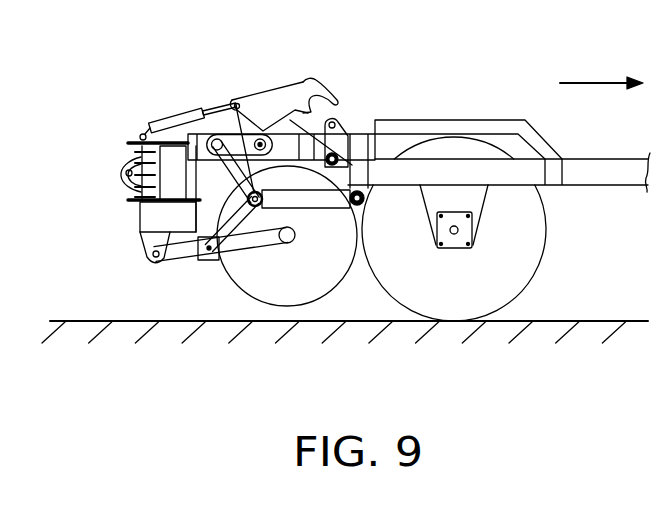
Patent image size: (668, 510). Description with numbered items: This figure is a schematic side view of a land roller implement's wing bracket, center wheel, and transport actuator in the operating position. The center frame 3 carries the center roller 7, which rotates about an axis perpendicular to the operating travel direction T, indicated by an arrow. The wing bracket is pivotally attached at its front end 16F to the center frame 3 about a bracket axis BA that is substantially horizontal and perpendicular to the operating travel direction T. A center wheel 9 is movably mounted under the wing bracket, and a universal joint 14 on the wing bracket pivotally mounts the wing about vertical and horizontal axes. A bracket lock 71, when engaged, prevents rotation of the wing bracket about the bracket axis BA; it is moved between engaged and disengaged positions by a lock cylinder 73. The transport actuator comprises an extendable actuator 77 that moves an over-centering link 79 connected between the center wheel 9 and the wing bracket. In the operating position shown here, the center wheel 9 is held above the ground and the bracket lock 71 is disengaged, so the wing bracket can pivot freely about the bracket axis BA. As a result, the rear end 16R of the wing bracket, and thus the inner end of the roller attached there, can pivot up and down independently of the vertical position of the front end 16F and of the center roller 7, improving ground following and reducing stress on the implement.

The center frame 3 is at (585, 160).
The center roller 7 is at (542, 257).
The center wheel 9 is at (342, 288).
The universal joint 14 is at (122, 171).
The front end of the wing bracket 16F is at (308, 110).
The rear end of the wing bracket 16R is at (137, 217).
The bracket lock 71 is at (280, 83).
The lock cylinder 73 is at (197, 117).
The extendable actuator 77 is at (315, 208).
The over-centering link 79 is at (258, 258).
The bracket axis BA is at (328, 162).
The operating travel direction T is at (601, 67).